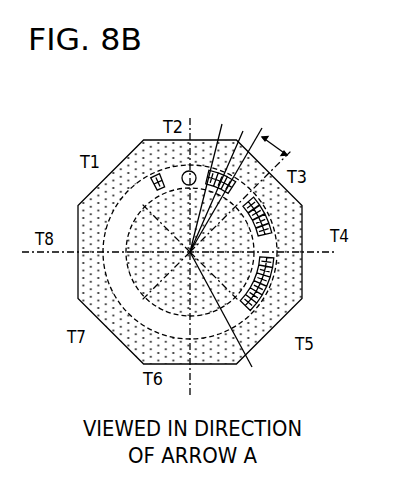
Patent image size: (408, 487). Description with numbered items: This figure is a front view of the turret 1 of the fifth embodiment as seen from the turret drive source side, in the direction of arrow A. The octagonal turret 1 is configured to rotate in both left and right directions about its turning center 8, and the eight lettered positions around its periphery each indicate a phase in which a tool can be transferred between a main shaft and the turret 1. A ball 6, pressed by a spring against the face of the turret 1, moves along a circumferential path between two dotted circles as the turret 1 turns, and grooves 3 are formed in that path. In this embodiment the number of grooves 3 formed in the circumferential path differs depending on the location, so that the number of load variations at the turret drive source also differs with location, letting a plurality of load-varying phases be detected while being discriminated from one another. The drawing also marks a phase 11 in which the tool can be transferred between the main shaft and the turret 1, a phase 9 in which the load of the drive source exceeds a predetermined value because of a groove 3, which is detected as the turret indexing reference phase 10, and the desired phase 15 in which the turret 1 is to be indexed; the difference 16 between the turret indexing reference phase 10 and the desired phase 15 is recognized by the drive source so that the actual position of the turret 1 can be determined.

The turret 1 is at (78, 201).
The groove 3 is at (162, 171).
The ball 6 is at (183, 173).
The turning center 8 is at (230, 326).
The phase in which the load exceeds a predetermined value 9 is at (243, 131).
The turret indexing reference phase 10 is at (263, 128).
The phase in which the tool can be transferred 11 is at (263, 284).
The desired phase 15 is at (263, 183).
The difference 16 is at (276, 146).